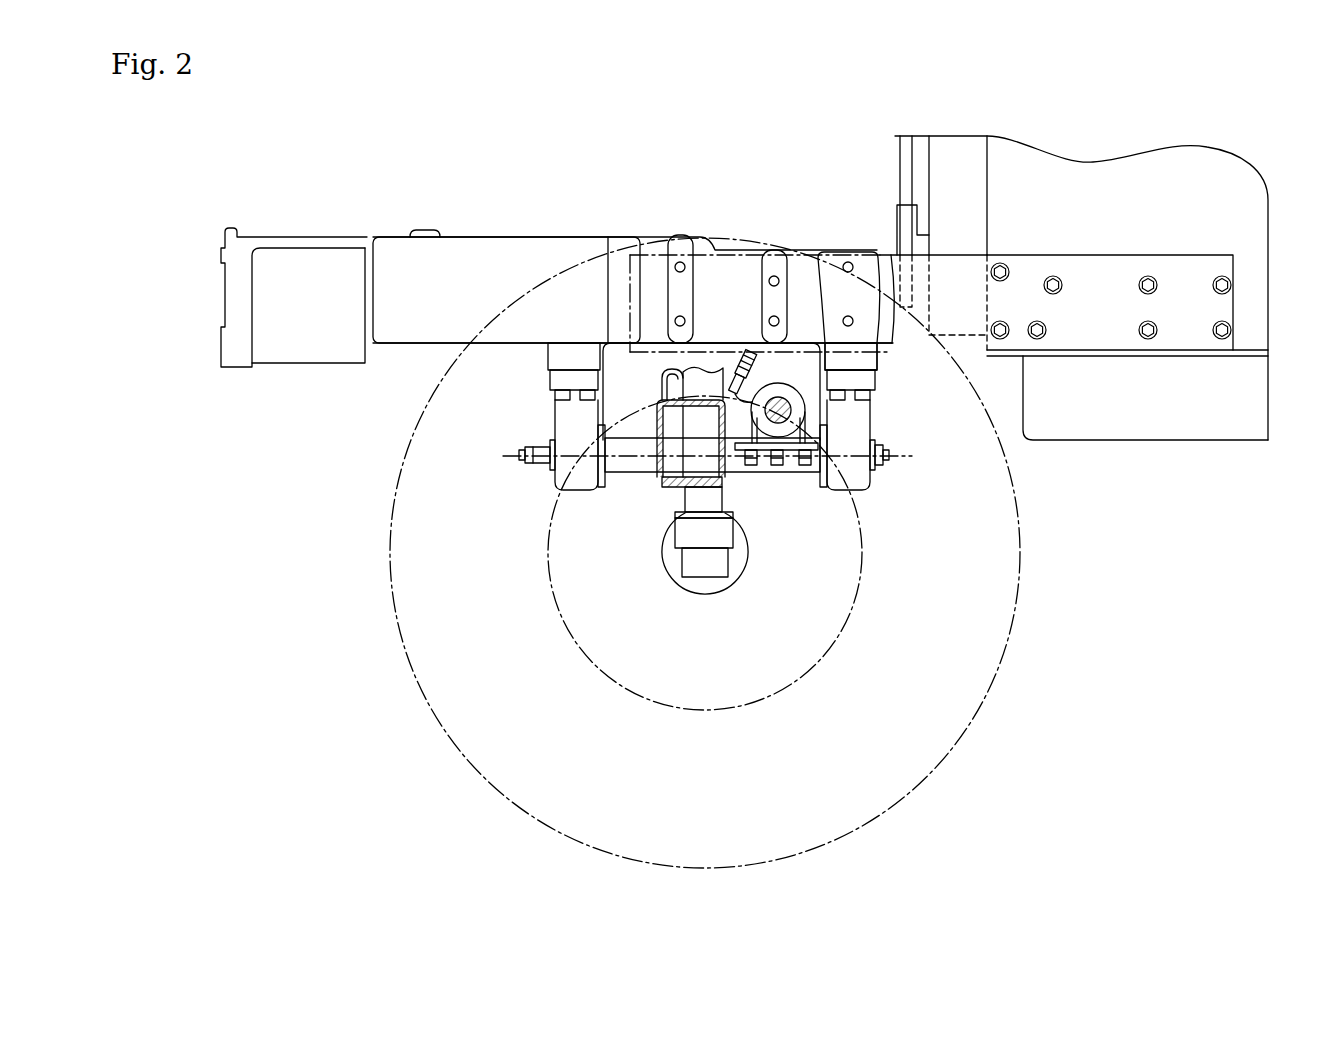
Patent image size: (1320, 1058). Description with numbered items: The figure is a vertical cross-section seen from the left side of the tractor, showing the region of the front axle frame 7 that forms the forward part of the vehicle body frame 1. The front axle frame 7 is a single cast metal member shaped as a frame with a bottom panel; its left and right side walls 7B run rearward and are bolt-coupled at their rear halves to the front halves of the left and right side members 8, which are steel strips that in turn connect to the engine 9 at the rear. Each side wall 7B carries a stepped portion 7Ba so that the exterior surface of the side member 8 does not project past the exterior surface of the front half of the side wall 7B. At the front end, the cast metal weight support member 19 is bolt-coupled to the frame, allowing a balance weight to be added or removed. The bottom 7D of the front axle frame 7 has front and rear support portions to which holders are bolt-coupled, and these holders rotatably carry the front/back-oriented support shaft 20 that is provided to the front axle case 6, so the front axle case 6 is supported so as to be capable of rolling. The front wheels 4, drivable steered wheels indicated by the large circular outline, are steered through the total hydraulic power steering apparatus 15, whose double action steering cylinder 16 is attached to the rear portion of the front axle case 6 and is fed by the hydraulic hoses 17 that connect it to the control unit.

The vehicle body frame 1 is at (1205, 248).
The front wheels 4 is at (418, 682).
The front axle case 6 is at (655, 430).
The front axle frame 7 is at (676, 286).
The side walls 7B is at (413, 320).
The stepped portion 7Ba is at (623, 240).
The bottom 7D is at (503, 345).
The side members 8 is at (1103, 255).
The engine 9 is at (1183, 412).
The power steering apparatus 15 is at (794, 380).
The steering cylinder 16 is at (781, 425).
The hydraulic hoses 17 is at (745, 355).
The weight support member 19 is at (297, 358).
The support shaft 20 is at (637, 465).